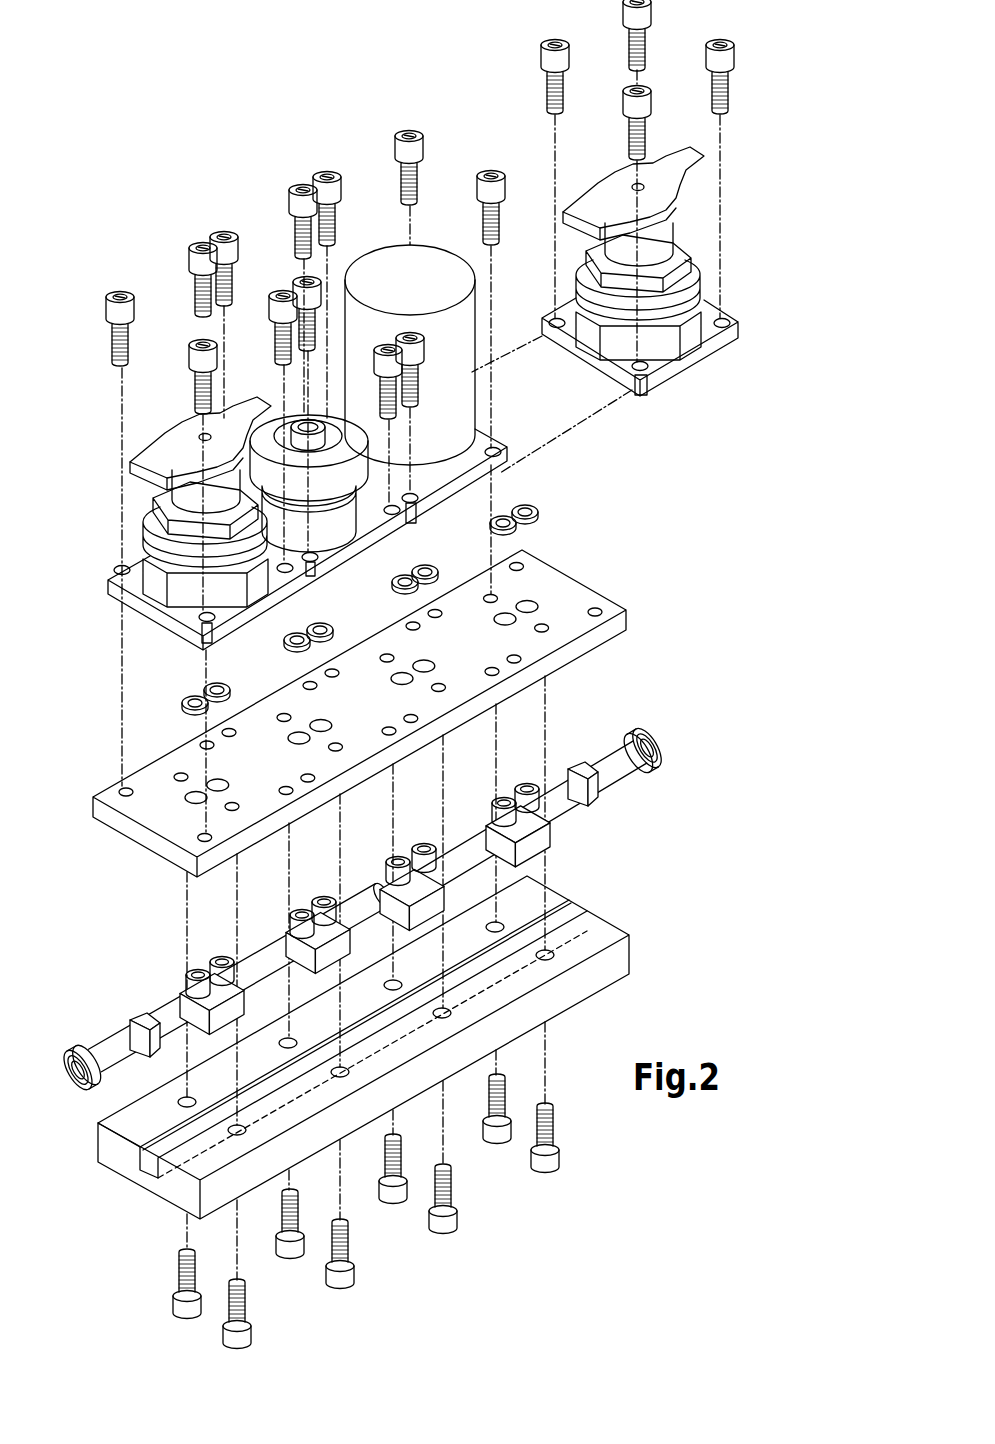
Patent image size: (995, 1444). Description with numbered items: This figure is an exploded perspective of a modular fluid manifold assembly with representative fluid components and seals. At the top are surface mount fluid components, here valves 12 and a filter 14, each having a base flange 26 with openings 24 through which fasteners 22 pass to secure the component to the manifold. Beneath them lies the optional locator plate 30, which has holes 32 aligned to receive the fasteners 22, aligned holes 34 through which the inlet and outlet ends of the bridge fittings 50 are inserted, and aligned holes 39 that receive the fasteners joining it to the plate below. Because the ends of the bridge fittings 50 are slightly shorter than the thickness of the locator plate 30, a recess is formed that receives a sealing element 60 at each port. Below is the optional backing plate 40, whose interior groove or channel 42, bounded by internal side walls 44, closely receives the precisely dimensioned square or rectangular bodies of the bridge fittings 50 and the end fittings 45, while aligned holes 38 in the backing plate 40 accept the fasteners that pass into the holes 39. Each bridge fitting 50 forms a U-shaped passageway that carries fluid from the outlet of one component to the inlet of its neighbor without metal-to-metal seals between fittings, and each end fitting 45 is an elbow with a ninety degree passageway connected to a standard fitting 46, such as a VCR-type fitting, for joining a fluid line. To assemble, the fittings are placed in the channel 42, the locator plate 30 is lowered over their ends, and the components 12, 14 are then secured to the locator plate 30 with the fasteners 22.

The valve 12 is at (179, 435).
The filter 14 is at (426, 297).
The fasteners 22 is at (118, 290).
The openings 24 is at (115, 575).
The base flanges 26 is at (170, 604).
The locator plate 30 is at (565, 592).
The holes 32 is at (598, 612).
The aligned holes 34 is at (195, 800).
The aligned holes 38 is at (393, 983).
The aligned holes 39 is at (545, 630).
The backing plate 40 is at (603, 932).
The groove or channel 42 is at (152, 1168).
The internal side walls 44 is at (110, 1152).
The end fittings 45 is at (615, 760).
The standard fitting 46 is at (662, 748).
The bridge fittings 50 is at (495, 832).
The sealing elements 60 is at (530, 512).